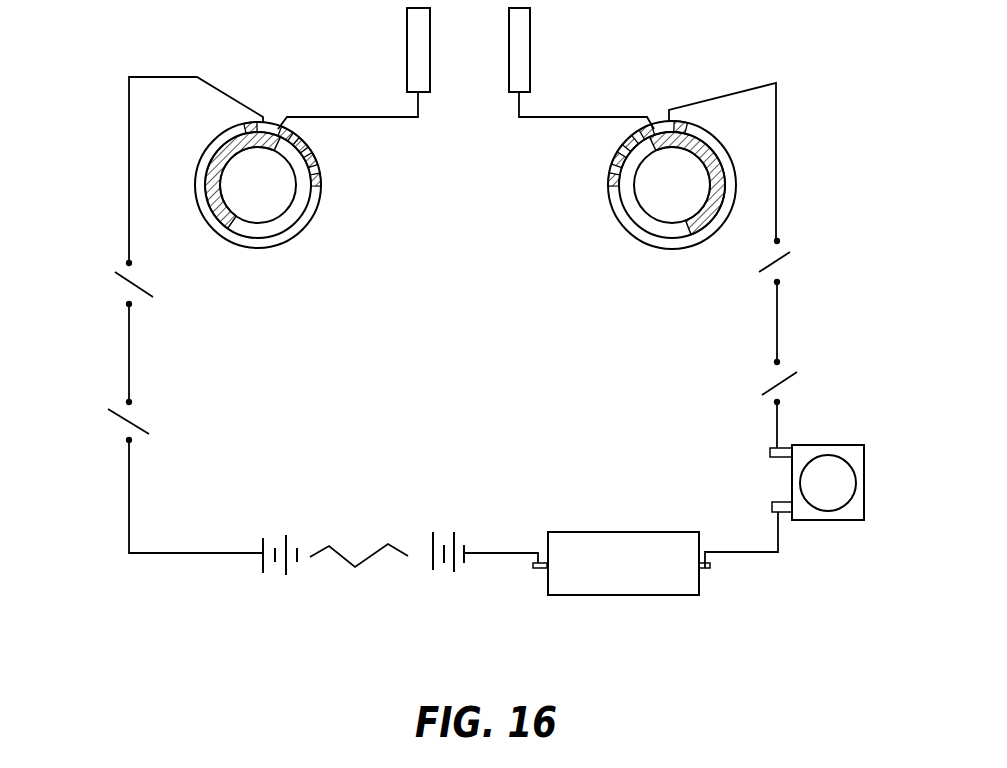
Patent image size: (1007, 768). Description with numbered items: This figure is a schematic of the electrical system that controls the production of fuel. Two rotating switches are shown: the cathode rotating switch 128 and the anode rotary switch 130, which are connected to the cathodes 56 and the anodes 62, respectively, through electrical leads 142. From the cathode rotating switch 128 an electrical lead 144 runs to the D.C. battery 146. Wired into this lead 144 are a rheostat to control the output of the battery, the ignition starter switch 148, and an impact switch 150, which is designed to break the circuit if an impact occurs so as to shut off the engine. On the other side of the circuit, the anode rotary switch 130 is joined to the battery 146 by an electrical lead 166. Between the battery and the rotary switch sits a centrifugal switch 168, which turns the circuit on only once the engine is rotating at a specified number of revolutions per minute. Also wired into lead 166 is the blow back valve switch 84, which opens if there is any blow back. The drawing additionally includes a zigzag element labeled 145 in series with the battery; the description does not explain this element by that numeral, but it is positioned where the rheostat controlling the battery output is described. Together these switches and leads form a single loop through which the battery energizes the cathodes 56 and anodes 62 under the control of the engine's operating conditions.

The cathodes 56 is at (530, 53).
The anodes 62 is at (405, 57).
The electrical leads 142 is at (363, 118).
The anode rotary switch 130 is at (303, 227).
The cathode rotating switch 128 is at (655, 248).
The electrical lead 166 is at (128, 148).
The electrical lead 144 is at (777, 174).
The blow back valve switch 84 is at (137, 282).
The centrifugal switch 168 is at (133, 416).
The impact switch 150 is at (770, 265).
The ignition starter switch 148 is at (780, 368).
The resistor 145 is at (340, 552).
The D.C. battery 146 is at (601, 532).